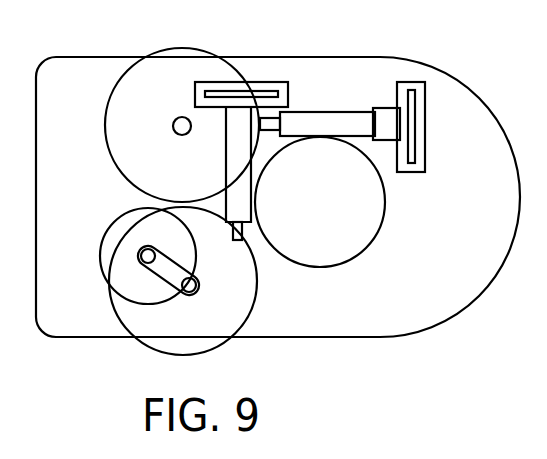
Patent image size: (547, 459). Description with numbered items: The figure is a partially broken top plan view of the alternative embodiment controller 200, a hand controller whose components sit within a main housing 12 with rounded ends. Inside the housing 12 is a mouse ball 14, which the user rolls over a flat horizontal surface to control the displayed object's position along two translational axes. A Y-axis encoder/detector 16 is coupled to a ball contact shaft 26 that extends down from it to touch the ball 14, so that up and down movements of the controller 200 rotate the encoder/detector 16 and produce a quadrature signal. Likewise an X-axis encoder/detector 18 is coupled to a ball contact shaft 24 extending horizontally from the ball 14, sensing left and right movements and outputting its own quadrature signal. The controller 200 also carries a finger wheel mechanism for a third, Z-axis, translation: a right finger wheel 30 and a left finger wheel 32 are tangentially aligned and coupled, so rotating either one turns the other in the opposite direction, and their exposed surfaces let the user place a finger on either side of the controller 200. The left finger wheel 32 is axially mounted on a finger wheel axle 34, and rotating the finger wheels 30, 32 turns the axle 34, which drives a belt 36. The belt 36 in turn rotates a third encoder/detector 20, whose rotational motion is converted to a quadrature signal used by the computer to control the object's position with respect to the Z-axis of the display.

The main housing 12 is at (440, 318).
The mouse ball 14 is at (363, 235).
The Y-axis encoder/detector 16 is at (272, 86).
The X-axis encoder/detector 18 is at (418, 118).
The third encoder/detector 20 is at (113, 268).
The ball contact shaft 24 is at (321, 118).
The ball contact shaft 26 is at (240, 163).
The right finger wheel 30 is at (199, 60).
The left finger wheel 32 is at (205, 342).
The finger wheel axle 34 is at (197, 281).
The belt 36 is at (188, 292).
The controller 200 is at (366, 313).